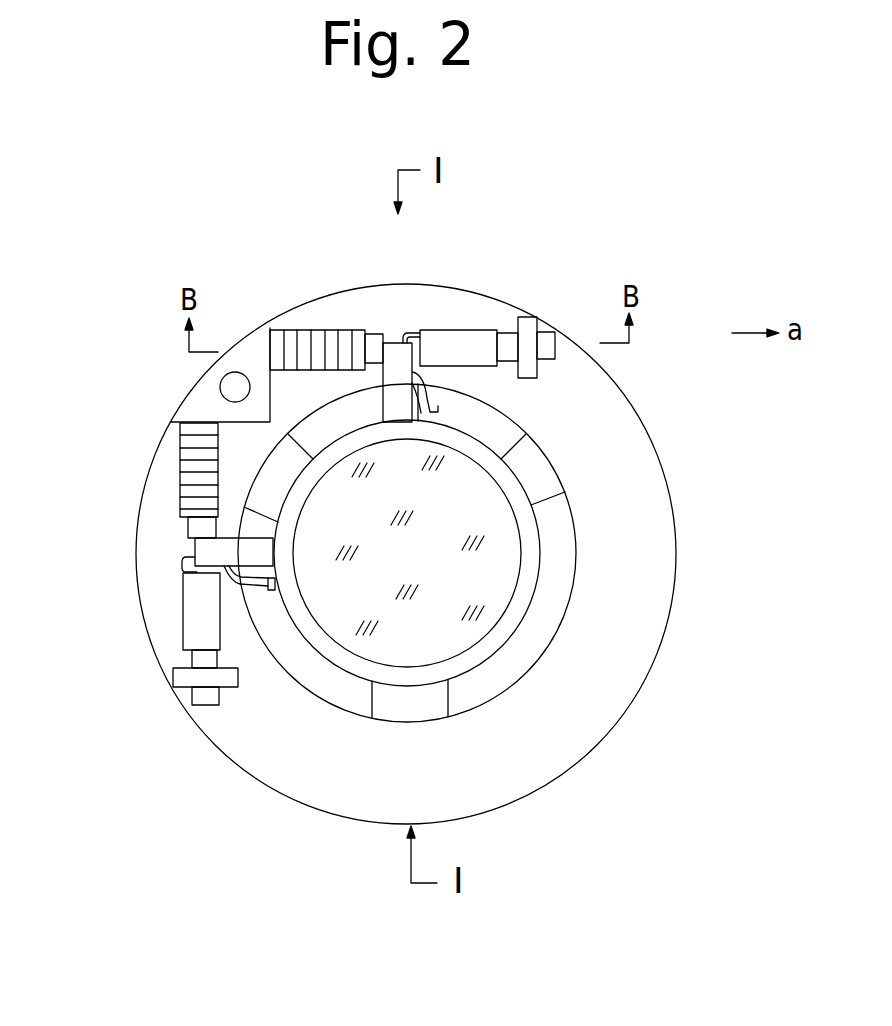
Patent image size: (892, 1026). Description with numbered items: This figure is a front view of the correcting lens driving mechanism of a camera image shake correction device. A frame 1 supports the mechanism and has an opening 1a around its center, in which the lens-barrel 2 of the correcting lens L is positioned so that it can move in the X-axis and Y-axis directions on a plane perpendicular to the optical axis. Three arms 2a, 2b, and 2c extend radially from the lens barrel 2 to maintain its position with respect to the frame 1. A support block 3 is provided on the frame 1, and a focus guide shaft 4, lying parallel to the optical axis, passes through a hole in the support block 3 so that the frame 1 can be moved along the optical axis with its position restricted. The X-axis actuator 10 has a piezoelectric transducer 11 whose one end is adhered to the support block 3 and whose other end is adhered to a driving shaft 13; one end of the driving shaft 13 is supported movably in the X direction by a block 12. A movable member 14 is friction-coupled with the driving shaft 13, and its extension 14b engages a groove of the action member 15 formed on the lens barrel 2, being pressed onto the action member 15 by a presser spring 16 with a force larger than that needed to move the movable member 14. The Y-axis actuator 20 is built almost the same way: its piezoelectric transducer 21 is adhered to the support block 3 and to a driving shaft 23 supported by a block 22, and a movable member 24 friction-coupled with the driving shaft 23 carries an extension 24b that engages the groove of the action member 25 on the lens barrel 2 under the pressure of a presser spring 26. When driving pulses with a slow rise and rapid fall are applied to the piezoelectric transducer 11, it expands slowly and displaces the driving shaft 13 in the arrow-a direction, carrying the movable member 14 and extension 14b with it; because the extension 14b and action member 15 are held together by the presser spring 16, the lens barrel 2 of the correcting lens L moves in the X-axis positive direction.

The frame 1 is at (520, 737).
The opening 1a is at (537, 623).
The lens-barrel 2 is at (533, 557).
The arm 2a is at (390, 703).
The arm 2b is at (548, 475).
The arm 2c is at (270, 465).
The support block 3 is at (185, 408).
The focus guide shaft 4 is at (222, 385).
The X-axis actuator 10 is at (427, 315).
The piezoelectric transducer 11 is at (303, 337).
The block 12 is at (537, 378).
The driving shaft 13 is at (543, 340).
The movable member 14 is at (447, 343).
The extension 14b is at (406, 333).
The action member 15 is at (393, 365).
The presser spring 16 is at (427, 407).
The Y-axis actuator 20 is at (167, 577).
The piezoelectric transducer 21 is at (188, 460).
The block 22 is at (173, 683).
The driving shaft 23 is at (202, 697).
The movable member 24 is at (192, 632).
The extension 24b is at (183, 558).
The action member 25 is at (210, 543).
The presser spring 26 is at (240, 586).
The correcting lens L is at (465, 640).